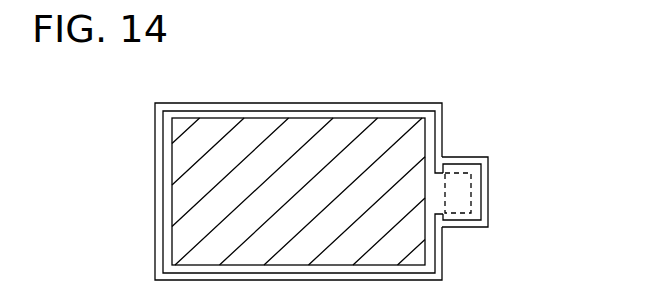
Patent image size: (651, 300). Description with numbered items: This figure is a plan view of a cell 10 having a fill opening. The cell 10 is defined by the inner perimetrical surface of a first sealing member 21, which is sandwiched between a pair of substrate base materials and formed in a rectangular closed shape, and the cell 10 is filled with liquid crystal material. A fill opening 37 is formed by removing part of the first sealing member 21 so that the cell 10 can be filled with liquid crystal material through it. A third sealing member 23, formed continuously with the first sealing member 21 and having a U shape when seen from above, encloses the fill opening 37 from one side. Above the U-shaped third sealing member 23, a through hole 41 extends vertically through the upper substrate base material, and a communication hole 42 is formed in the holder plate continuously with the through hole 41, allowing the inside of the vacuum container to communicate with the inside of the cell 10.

The cell 10 is at (228, 202).
The first sealing member 21 is at (322, 103).
The third sealing member 23 is at (532, 160).
The fill opening 37 is at (437, 192).
The through hole 41 is at (533, 192).
The communication hole 42 is at (472, 188).